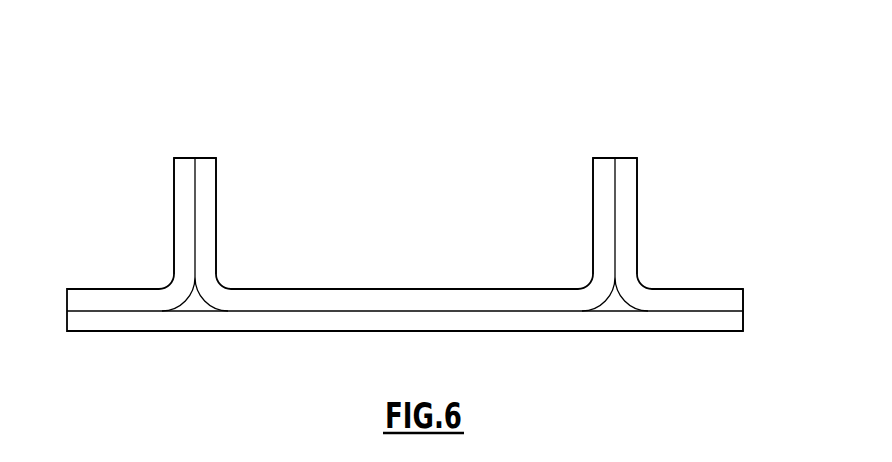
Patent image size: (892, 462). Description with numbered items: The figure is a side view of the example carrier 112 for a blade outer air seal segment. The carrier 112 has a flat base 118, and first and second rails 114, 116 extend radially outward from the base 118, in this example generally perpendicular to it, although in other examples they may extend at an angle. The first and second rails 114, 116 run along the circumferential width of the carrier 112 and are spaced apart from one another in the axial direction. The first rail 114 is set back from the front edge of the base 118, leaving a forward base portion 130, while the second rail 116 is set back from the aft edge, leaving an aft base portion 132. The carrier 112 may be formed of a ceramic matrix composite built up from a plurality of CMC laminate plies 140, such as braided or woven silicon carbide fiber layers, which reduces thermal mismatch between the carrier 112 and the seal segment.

The carrier 112 is at (746, 76).
The first rail 114 is at (200, 207).
The second rail 116 is at (622, 207).
The base 118 is at (455, 297).
The forward base portion 130 is at (111, 315).
The aft base portion 132 is at (717, 300).
The CMC laminate plies 140 is at (372, 346).